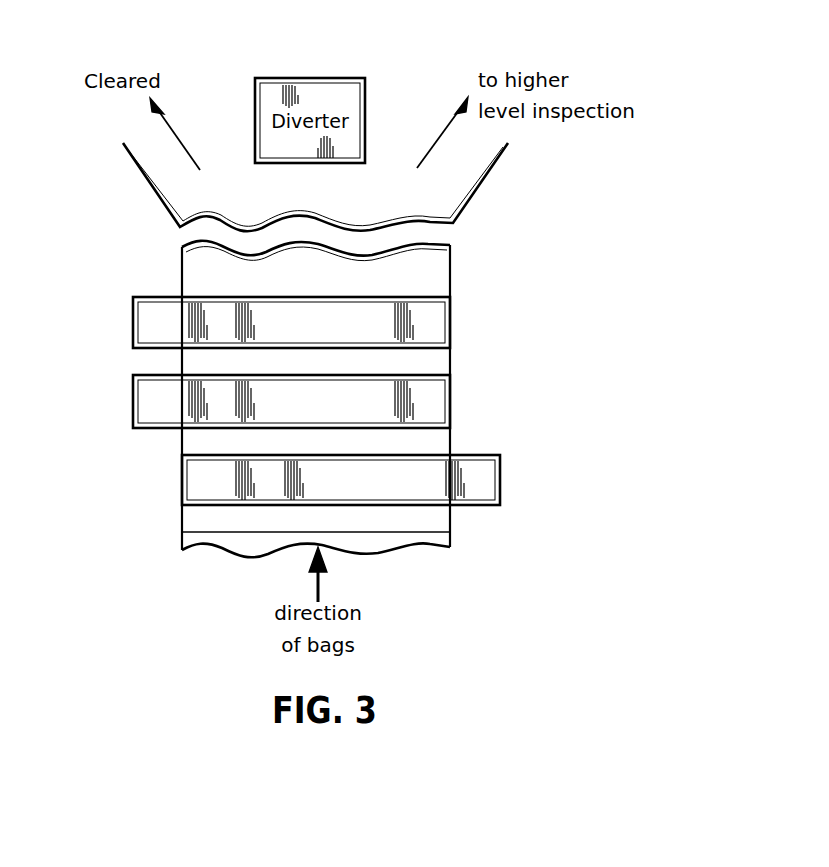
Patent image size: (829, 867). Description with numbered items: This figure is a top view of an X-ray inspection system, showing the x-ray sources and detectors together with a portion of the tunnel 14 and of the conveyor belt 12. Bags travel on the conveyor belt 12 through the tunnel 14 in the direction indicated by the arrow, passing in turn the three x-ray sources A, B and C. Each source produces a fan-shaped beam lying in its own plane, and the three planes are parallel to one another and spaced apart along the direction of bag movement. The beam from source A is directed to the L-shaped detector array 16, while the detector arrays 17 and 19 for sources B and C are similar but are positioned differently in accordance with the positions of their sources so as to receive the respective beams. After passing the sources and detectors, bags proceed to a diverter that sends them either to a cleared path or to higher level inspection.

The conveyor belt 12 is at (377, 547).
The tunnel 14 is at (453, 522).
The detector array 16 is at (445, 462).
The detector array 17 is at (443, 392).
The detector array 19 is at (443, 310).